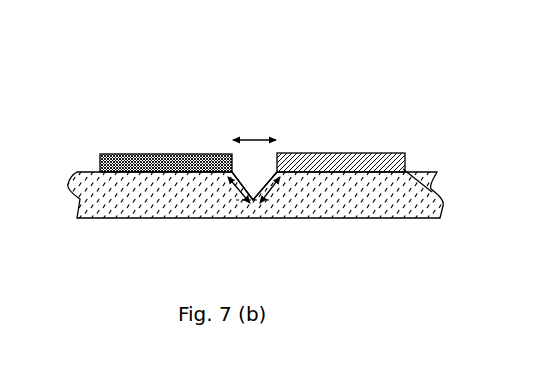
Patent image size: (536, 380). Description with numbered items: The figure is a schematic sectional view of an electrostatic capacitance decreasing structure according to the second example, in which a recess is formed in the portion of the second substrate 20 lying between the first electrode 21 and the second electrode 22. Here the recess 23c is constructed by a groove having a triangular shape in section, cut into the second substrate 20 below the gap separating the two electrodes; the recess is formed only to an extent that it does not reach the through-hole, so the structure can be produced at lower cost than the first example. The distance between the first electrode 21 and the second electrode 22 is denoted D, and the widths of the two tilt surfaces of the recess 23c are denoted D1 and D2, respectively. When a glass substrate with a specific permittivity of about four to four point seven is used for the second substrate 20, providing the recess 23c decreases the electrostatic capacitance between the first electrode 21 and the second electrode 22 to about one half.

The second substrate 20 is at (367, 219).
The first electrode 21 is at (143, 160).
The second electrode 22 is at (363, 160).
The recess 23c is at (248, 173).
The distance between the first electrode and the second electrode D is at (254, 127).
The width of tilt surface D1 is at (240, 194).
The width of tilt surface D2 is at (278, 194).